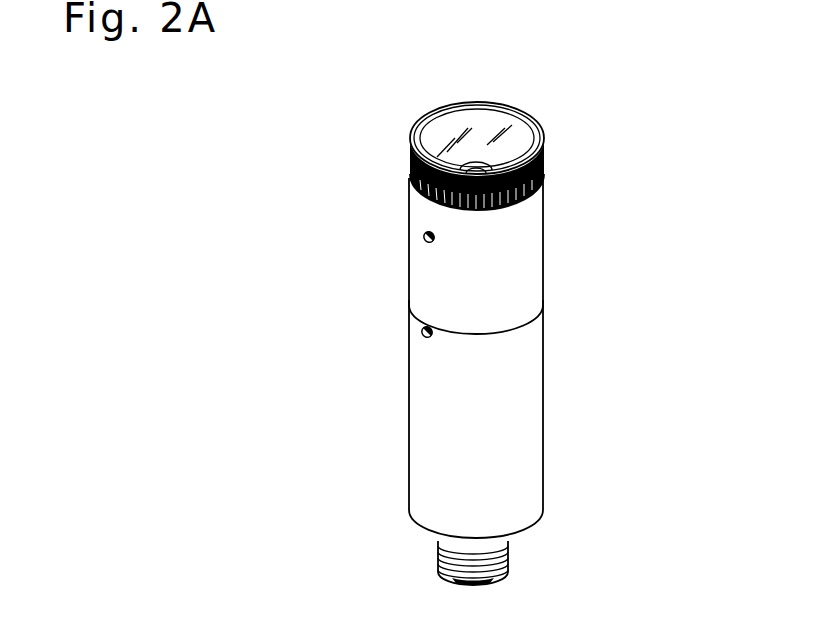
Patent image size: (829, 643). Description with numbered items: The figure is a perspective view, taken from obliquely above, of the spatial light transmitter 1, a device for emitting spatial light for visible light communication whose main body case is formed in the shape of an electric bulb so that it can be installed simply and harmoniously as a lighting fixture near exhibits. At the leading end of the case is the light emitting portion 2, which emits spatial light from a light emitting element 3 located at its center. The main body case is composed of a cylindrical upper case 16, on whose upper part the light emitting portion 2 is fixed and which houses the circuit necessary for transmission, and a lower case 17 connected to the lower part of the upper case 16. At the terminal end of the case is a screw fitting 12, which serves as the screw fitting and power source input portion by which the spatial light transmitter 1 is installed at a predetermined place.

The spatial light transmitter 1 is at (566, 317).
The light emitting portion 2 is at (523, 138).
The light emitting element 3 is at (478, 170).
The screw fitting 12 is at (503, 555).
The upper case 16 is at (527, 237).
The lower case 17 is at (527, 403).